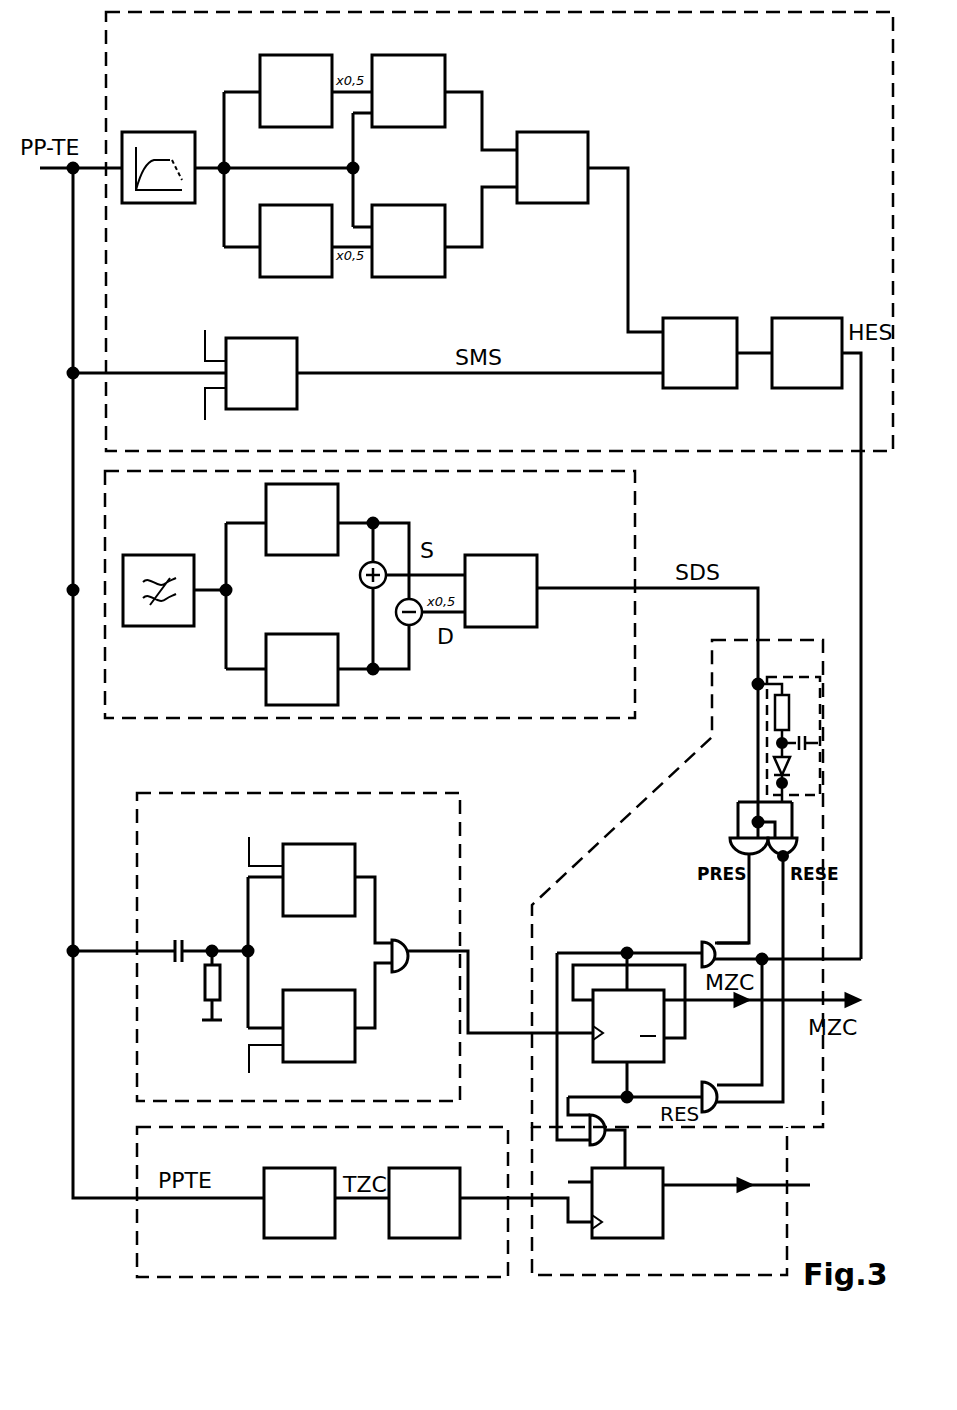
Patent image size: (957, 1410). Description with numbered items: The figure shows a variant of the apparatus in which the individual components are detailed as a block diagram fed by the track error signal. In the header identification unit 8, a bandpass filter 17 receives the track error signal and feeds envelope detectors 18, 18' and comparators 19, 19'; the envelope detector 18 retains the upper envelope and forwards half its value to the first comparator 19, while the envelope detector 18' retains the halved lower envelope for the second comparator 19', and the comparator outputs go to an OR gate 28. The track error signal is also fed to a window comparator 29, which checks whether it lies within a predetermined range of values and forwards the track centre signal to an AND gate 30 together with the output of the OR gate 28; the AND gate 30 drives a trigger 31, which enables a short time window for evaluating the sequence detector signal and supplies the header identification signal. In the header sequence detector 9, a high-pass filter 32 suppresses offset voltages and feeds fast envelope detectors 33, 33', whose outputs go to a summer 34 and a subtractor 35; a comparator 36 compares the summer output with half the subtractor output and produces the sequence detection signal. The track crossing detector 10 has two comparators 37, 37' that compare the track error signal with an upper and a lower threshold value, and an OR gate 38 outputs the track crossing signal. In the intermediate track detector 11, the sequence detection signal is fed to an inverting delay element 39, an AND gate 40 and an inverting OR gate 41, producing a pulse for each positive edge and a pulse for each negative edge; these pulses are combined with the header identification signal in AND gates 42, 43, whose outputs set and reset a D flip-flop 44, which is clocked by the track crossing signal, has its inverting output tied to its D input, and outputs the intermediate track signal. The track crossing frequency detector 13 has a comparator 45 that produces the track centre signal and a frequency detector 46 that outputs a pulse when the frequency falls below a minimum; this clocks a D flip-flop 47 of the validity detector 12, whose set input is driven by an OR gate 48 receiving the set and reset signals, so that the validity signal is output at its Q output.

The header identification unit 8 is at (850, 60).
The header sequence detector 9 is at (645, 511).
The track crossing detector 10 is at (460, 790).
The intermediate track detector 11 is at (626, 812).
The validity detector 12 is at (790, 1140).
The track crossing frequency detector 13 is at (137, 1240).
The bandpass filter 17 is at (150, 131).
The envelope detector 18 is at (299, 72).
The envelope detector 18' is at (296, 226).
The first comparator 19 is at (429, 72).
The second comparator 19' is at (440, 251).
The OR gate 28 is at (576, 140).
The window comparator 29 is at (290, 387).
The AND gate 30 is at (704, 318).
The trigger 31 is at (806, 318).
The high-pass filter 32 is at (156, 555).
The upper envelope detector 33 is at (332, 510).
The lower envelope detector 33' is at (334, 673).
The summer 34 is at (360, 583).
The subtractor 35 is at (418, 625).
The comparator 36 is at (538, 618).
The comparator 37 is at (319, 863).
The comparator 37' is at (320, 1045).
The OR gate 38 is at (408, 940).
The inverting delay element 39 is at (795, 680).
The AND gate 40 is at (730, 846).
The inverting OR gate 41 is at (795, 846).
The AND gate 42 is at (710, 936).
The AND gate 43 is at (710, 1082).
The D flip-flop 44 is at (605, 1062).
The comparator 45 is at (322, 1230).
The frequency detector 46 is at (450, 1232).
The D flip-flop 47 is at (660, 1229).
The OR gate 48 is at (658, 1122).